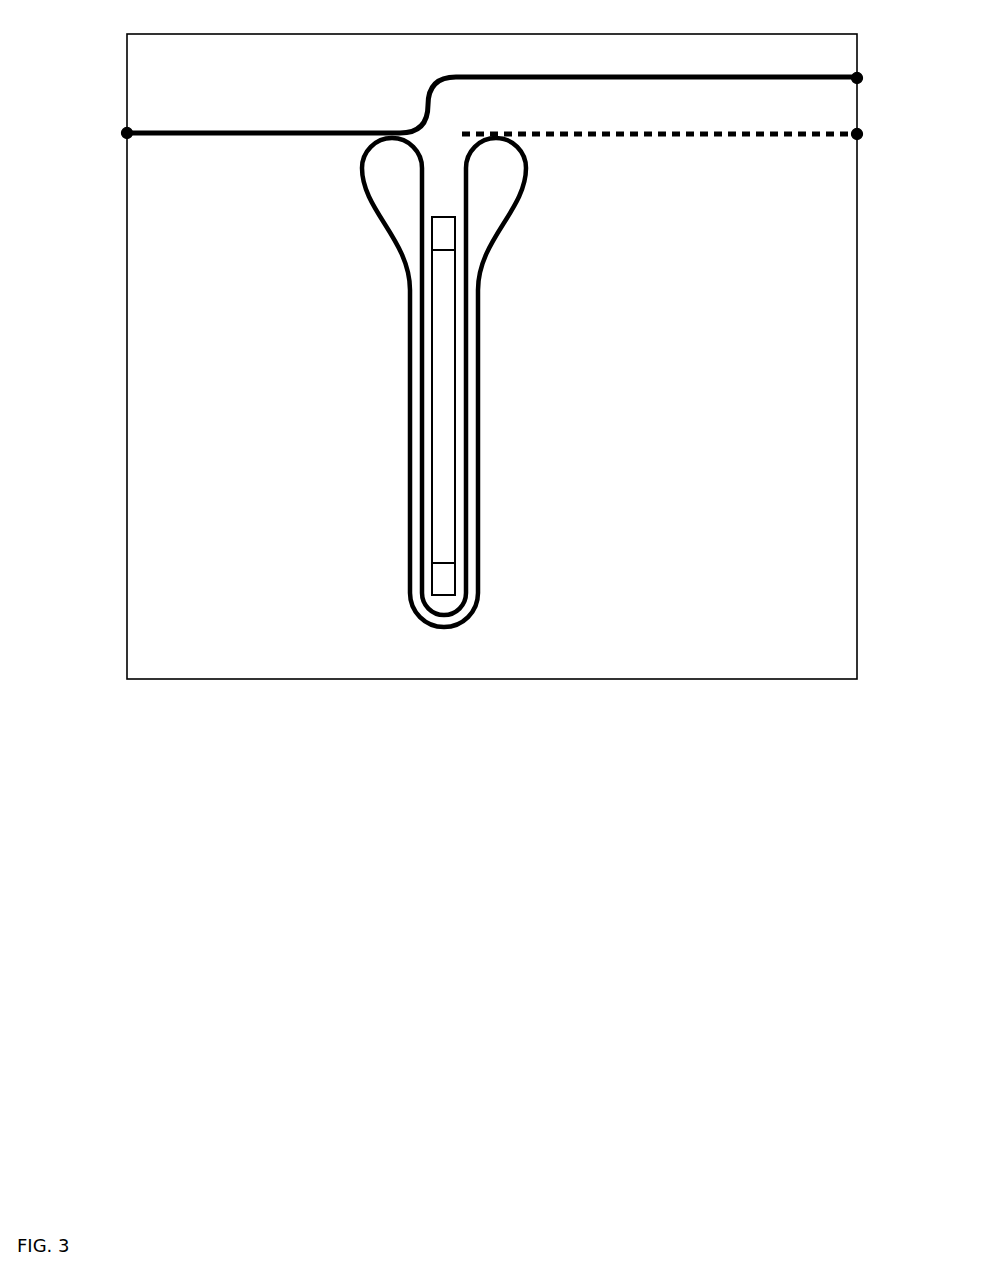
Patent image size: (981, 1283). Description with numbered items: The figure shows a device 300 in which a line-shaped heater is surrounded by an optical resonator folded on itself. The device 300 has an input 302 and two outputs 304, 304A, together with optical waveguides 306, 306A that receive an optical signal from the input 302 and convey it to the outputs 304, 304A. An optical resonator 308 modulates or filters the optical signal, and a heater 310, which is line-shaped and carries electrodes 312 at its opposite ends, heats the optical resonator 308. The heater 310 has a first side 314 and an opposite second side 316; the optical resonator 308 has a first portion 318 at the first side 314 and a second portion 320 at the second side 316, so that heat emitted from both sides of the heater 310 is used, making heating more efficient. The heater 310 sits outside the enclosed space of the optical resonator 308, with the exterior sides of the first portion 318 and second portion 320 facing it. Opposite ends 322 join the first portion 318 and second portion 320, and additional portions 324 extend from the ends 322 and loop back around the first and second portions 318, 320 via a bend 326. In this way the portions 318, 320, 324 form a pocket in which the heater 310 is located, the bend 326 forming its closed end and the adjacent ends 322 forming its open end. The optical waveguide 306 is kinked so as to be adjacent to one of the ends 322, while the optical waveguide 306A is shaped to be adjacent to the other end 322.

The device 300 is at (421, 34).
The input 302 is at (125, 131).
The output 304 is at (860, 77).
The output 304A is at (860, 133).
The optical waveguide 306 is at (630, 77).
The optical waveguide 306A is at (622, 134).
The optical resonator 308 is at (444, 392).
The heater 310 is at (458, 406).
The electrodes 312 is at (456, 235).
The first side 314 is at (432, 359).
The second side 316 is at (455, 359).
The first portion 318 is at (420, 412).
The second portion 320 is at (466, 417).
The opposite ends 322 is at (364, 172).
The additional portions 324 is at (408, 452).
The bend 326 is at (420, 622).